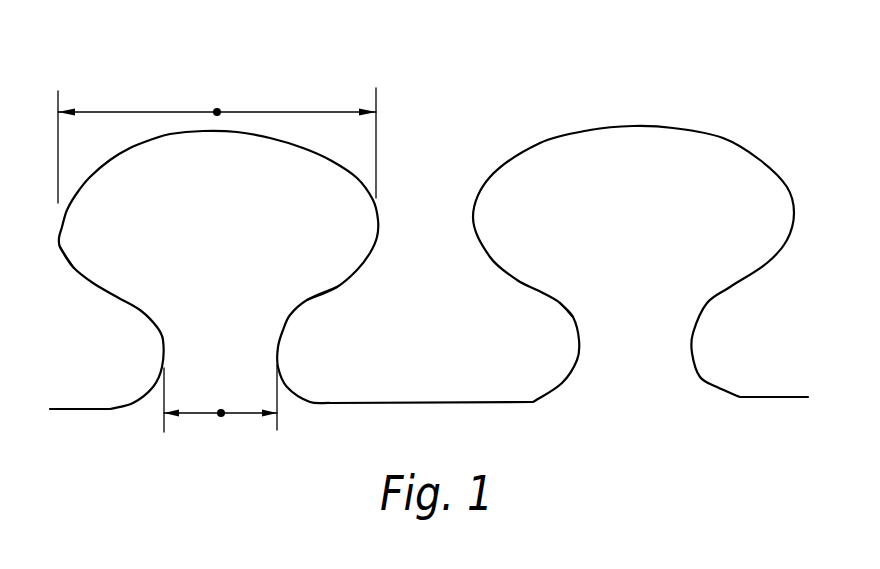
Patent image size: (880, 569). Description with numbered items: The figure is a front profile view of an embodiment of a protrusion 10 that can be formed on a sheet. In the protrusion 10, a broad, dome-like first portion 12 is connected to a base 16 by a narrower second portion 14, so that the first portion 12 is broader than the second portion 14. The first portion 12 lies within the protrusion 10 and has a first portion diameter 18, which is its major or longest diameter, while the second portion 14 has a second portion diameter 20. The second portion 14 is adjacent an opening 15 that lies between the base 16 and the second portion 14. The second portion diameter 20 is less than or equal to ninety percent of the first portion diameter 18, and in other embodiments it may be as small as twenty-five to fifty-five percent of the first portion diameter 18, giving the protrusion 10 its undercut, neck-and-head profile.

The protrusion 10 is at (150, 67).
The first portion 12 is at (118, 297).
The second portion 14 is at (278, 347).
The base 16 is at (421, 403).
The first portion diameter 18 is at (217, 112).
The second portion diameter 20 is at (221, 414).
The opening 15 is at (253, 440).